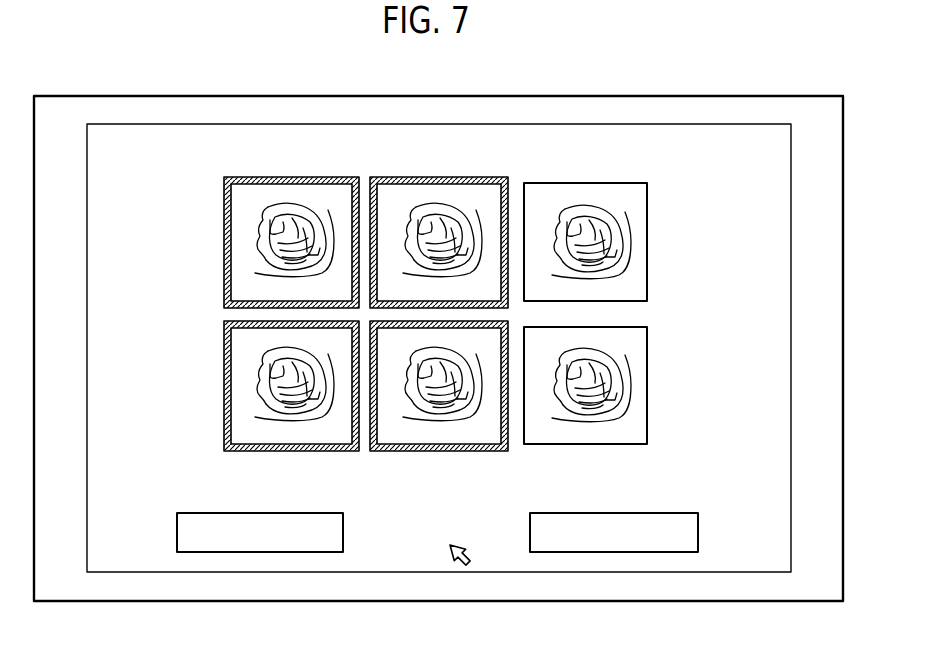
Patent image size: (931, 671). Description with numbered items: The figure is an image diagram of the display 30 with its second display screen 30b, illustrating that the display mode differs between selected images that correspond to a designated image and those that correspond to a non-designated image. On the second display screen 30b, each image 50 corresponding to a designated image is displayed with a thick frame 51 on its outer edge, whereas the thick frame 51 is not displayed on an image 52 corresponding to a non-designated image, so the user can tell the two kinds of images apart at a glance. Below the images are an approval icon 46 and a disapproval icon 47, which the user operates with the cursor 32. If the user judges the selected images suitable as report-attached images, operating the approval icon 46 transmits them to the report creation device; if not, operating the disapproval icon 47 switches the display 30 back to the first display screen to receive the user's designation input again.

The display 30 is at (63, 602).
The second display screen 30b is at (310, 124).
The cursor 32 is at (470, 563).
The approval icon 46 is at (343, 531).
The disapproval icon 47 is at (699, 531).
The image corresponding to the designated image 50 is at (289, 204).
The thick frame 51 is at (224, 203).
The image corresponding to the non-designated image 52 is at (577, 199).